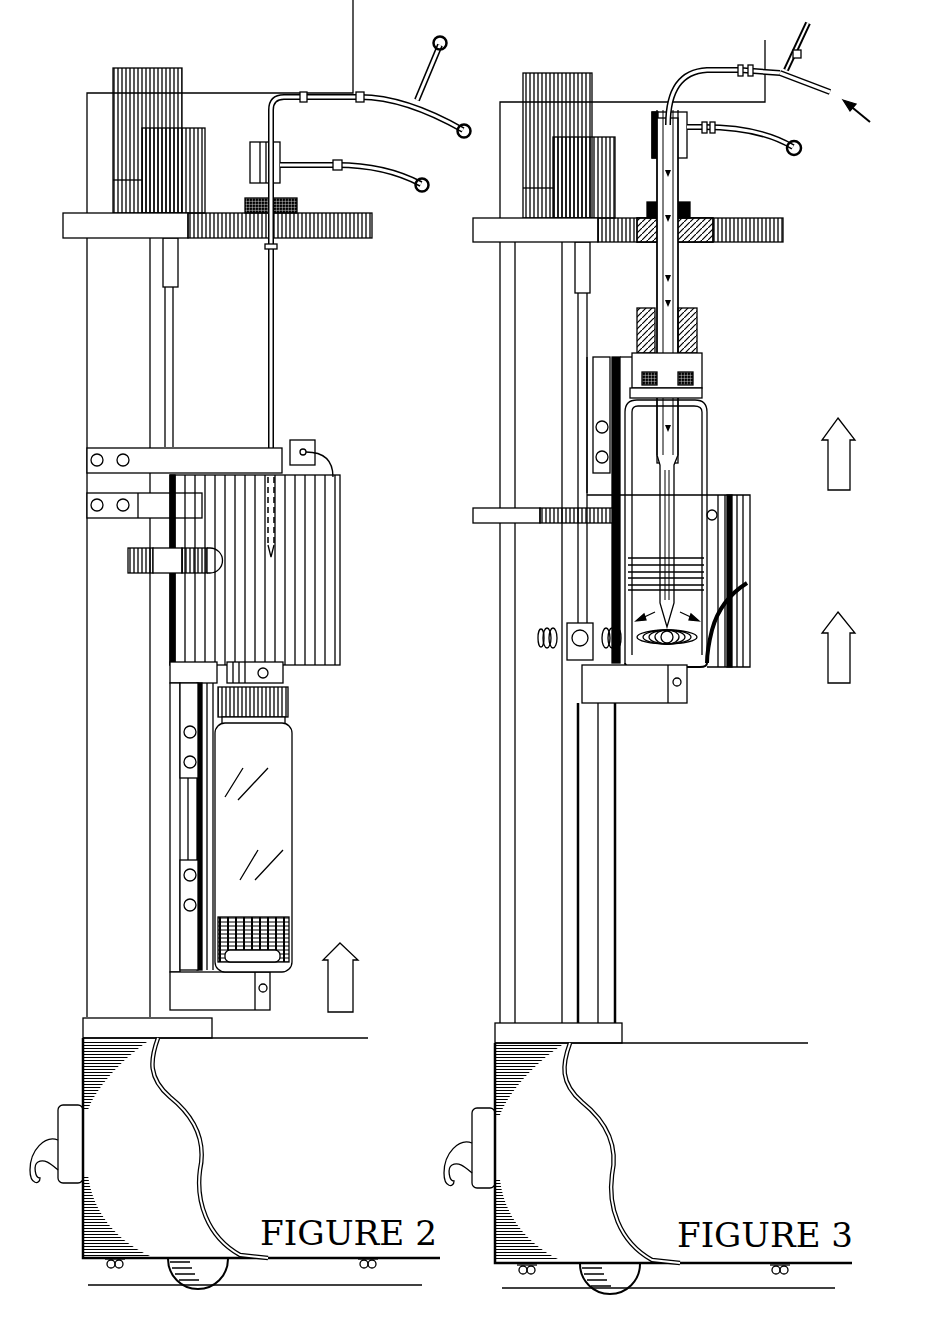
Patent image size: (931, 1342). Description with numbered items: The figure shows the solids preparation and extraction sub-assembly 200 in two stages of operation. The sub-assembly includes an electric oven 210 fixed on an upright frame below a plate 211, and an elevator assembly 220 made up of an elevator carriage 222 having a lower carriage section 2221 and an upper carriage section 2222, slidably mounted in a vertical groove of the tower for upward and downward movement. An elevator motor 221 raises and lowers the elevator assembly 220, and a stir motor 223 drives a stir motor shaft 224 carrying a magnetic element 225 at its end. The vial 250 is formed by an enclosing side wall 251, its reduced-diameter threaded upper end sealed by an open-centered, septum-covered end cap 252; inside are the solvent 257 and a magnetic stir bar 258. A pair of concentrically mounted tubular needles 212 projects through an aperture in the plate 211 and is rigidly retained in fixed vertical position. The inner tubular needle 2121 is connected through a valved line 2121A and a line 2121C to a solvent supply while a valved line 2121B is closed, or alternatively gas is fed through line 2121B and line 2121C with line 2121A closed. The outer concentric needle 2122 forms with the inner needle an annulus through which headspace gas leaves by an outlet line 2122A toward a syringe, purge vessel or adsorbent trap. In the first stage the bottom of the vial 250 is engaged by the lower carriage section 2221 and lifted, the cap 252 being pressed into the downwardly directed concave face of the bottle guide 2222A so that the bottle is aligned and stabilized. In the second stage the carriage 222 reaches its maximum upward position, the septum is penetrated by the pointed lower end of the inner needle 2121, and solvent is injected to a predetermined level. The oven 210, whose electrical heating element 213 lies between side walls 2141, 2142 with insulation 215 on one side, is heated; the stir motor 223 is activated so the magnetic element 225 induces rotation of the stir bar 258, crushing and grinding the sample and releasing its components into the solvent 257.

In FIG. 2, the solids preparation and extraction sub-assembly 200 is at (343, 563).
In FIG. 2, the oven 210 is at (318, 532).
In FIG. 3, the oven 210 is at (719, 581).
In FIG. 2, the plate 211 is at (365, 228).
In FIG. 3, the plate 211 is at (780, 222).
In FIG. 2, the concentric needle assembly 212 is at (277, 191).
In FIG. 3, the concentric needle assembly 212 is at (761, 324).
In FIG. 3, the inner tubular needle 2121 is at (674, 197).
In FIG. 3, the outer concentric needle 2122 is at (680, 168).
In FIG. 3, the valved line 2121A is at (813, 82).
In FIG. 3, the valved line 2121B is at (807, 42).
In FIG. 3, the line 2121C is at (710, 68).
In FIG. 3, the outlet line 2122A is at (768, 128).
In FIG. 3, the electrical heating element 213 is at (740, 557).
In FIG. 3, the side wall 2141 is at (750, 574).
In FIG. 3, the side wall 2142 is at (717, 518).
In FIG. 3, the insulation 215 is at (732, 540).
In FIG. 2, the elevator assembly 220 is at (188, 713).
In FIG. 2, the elevator motor 221 is at (138, 68).
In FIG. 3, the elevator motor 221 is at (548, 73).
In FIG. 2, the elevator carriage 222 is at (185, 747).
In FIG. 2, the lower carriage section 2221 is at (175, 987).
In FIG. 3, the lower carriage section 2221 is at (675, 698).
In FIG. 2, the upper carriage section 2222 is at (182, 675).
In FIG. 2, the bottle guide 2222A is at (285, 675).
In FIG. 3, the bottle guide 2222A is at (700, 340).
In FIG. 2, the stir motor 223 is at (188, 128).
In FIG. 3, the stir motor 223 is at (597, 137).
In FIG. 2, the stir motor shaft 224 is at (167, 350).
In FIG. 3, the stir motor shaft 224 is at (578, 330).
In FIG. 2, the magnetic element 225 is at (128, 557).
In FIG. 3, the magnetic element 225 is at (540, 633).
In FIG. 2, the vial 250 is at (303, 829).
In FIG. 3, the vial 250 is at (720, 508).
In FIG. 2, the side wall 251 is at (293, 777).
In FIG. 2, the end cap 252 is at (288, 705).
In FIG. 3, the solvent 257 is at (692, 588).
In FIG. 2, the magnetic stir bar 258 is at (273, 957).